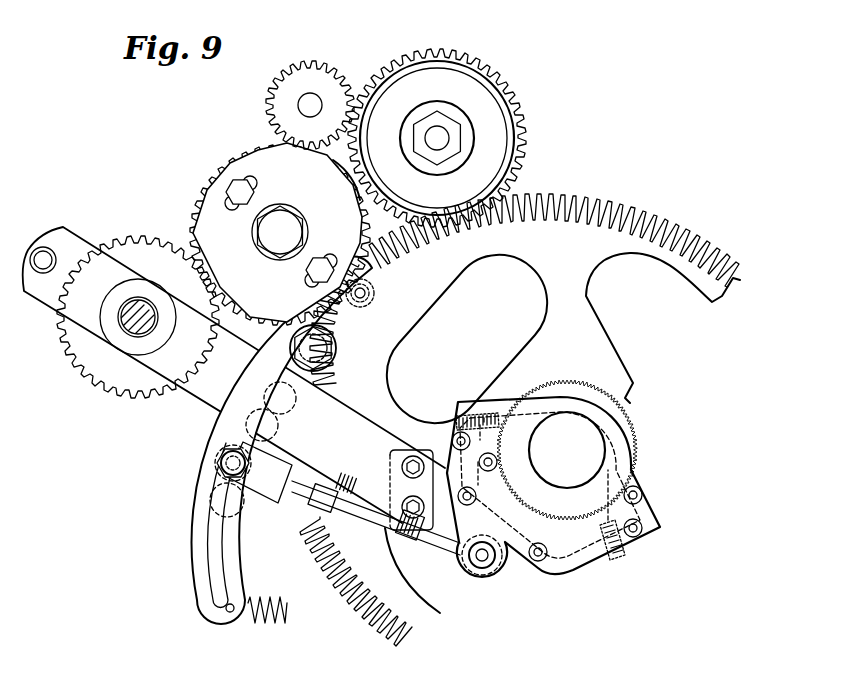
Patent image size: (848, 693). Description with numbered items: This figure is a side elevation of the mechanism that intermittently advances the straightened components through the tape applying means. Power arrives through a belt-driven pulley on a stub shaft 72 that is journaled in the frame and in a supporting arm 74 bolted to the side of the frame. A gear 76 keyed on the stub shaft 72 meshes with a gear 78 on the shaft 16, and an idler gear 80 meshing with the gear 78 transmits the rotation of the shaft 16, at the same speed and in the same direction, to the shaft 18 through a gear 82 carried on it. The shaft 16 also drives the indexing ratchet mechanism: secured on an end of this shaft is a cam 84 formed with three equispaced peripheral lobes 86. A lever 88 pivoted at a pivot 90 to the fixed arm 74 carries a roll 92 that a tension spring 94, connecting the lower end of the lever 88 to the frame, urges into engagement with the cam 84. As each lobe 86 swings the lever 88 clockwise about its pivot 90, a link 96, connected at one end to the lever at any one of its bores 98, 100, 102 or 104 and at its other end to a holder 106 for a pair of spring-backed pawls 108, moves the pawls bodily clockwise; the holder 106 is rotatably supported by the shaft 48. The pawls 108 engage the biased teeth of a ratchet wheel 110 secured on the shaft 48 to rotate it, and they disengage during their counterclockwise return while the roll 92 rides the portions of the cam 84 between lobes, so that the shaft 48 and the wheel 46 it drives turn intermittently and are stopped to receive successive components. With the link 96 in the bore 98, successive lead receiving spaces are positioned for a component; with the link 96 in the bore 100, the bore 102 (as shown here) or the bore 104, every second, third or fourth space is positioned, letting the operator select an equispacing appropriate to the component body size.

The shaft 16 is at (255, 233).
The shaft 18 is at (445, 120).
The wheel 46 is at (605, 347).
The shaft 48 is at (605, 442).
The stub shaft 72 is at (128, 311).
The supporting arm 74 is at (200, 402).
The gear 76 is at (103, 386).
The gear 78 is at (232, 165).
The idler gear 80 is at (329, 66).
The gear 82 is at (470, 55).
The cam 84 is at (318, 196).
The lobe 86 is at (333, 160).
The lever 88 is at (200, 592).
The pivot 90 is at (345, 368).
The roll 92 is at (373, 270).
The tension spring 94 is at (268, 604).
The link 96 is at (302, 503).
The bore 98 is at (268, 385).
The bore 100 is at (240, 412).
The bore 102 is at (214, 466).
The bore 104 is at (203, 512).
The holder 106 is at (588, 570).
The pawl 108 is at (503, 400).
The ratchet wheel 110 is at (637, 455).